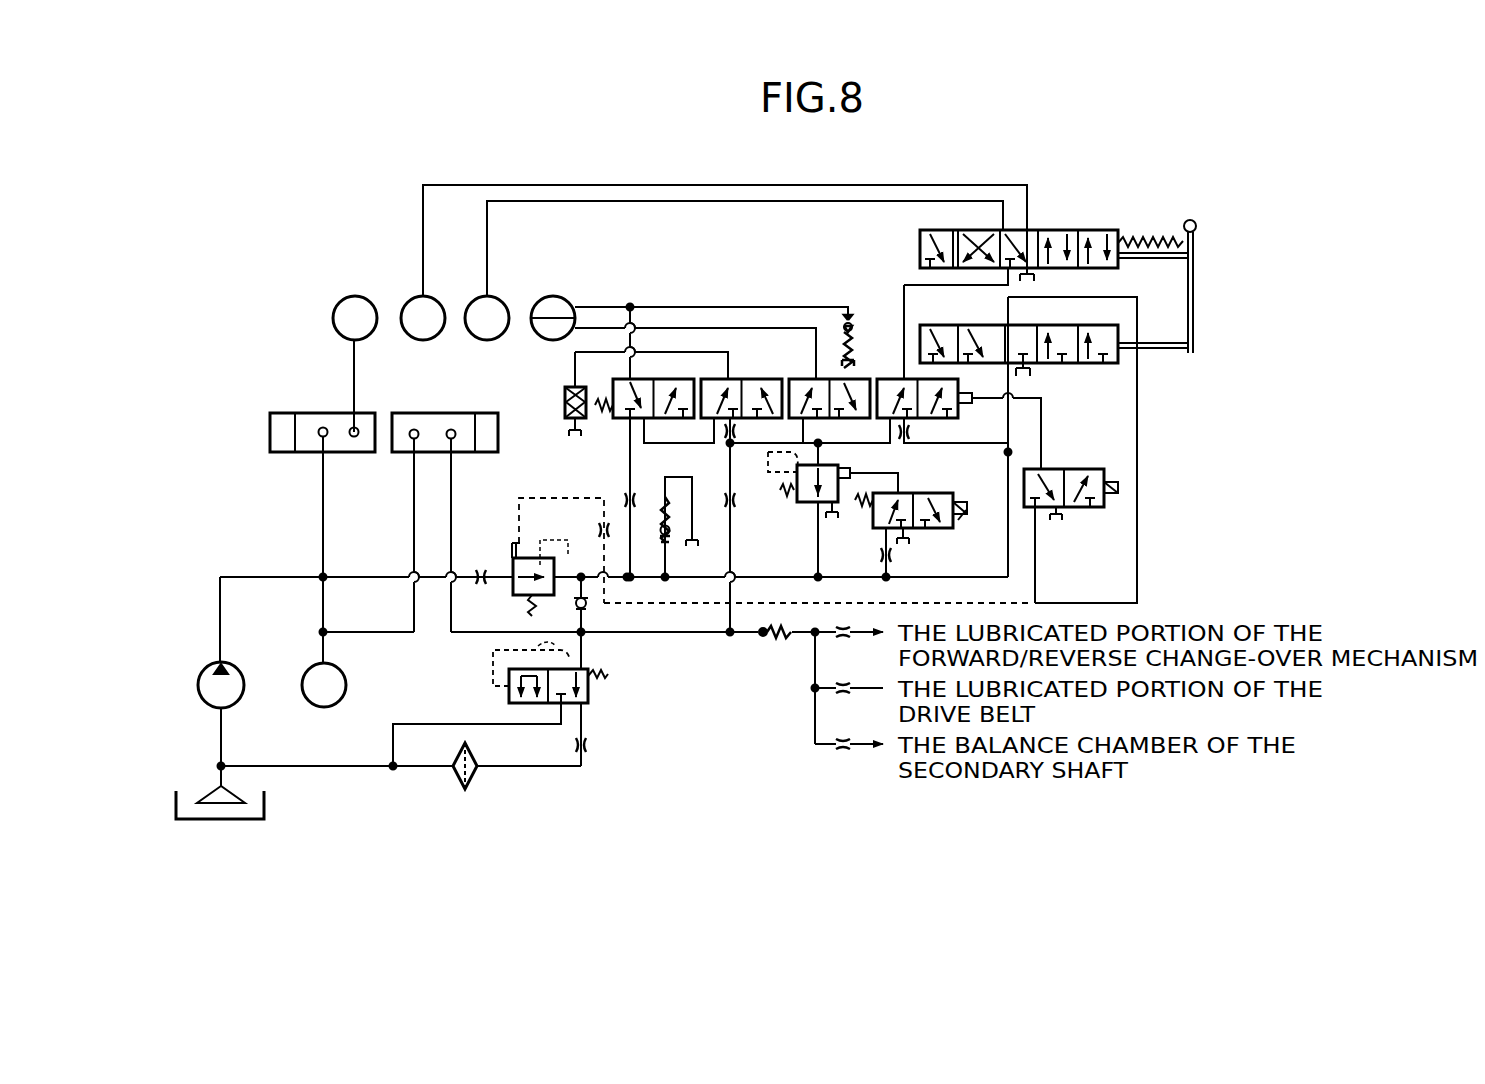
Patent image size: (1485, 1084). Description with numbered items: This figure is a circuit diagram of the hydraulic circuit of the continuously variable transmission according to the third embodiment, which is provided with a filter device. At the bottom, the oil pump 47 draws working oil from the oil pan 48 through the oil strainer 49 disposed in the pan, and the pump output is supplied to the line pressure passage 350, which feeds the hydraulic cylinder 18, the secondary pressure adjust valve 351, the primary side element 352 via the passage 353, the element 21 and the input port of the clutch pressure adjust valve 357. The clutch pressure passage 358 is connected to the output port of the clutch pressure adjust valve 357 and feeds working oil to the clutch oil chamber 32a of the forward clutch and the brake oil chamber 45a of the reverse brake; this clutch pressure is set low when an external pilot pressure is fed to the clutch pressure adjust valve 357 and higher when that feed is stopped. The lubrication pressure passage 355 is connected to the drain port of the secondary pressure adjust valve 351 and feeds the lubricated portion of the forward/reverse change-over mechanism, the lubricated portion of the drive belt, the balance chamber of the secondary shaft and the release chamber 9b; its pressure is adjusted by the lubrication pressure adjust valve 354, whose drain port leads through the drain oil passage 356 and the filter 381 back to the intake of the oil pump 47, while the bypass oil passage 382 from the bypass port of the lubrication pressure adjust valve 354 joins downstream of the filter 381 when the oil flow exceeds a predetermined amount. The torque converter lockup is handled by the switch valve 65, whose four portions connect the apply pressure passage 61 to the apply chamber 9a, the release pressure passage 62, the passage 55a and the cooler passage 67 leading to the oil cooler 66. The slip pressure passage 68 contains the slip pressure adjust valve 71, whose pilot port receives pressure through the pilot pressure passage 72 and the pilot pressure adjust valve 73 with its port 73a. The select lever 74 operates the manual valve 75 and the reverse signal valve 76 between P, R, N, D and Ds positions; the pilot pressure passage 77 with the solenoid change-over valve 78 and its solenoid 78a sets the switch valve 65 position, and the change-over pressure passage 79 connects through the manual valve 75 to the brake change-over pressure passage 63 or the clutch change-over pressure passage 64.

The primary pulley hydraulic cylinder 18 is at (355, 318).
The brake oil chamber 45a is at (714, 262).
The clutch oil chamber 32a is at (734, 270).
The apply chamber 9a is at (570, 300).
The release chamber 9b is at (540, 337).
The apply pressure passage 61 is at (604, 306).
The release pressure passage 62 is at (692, 326).
The brake change-over pressure passage 63 is at (745, 186).
The clutch change-over pressure passage 64 is at (806, 202).
The switch valve 65 is at (756, 371).
The oil cooler 66 is at (562, 406).
The cooler passage 67 is at (706, 348).
The slip pressure passage 68 is at (840, 454).
The slip pressure adjust valve 71 is at (804, 510).
The pilot pressure passage 72 is at (902, 486).
The pilot pressure adjust valve 73 is at (917, 533).
The pilot port 73a is at (965, 523).
The select lever 74 is at (1188, 278).
The manual valve 75 is at (919, 256).
The reverse signal valve 76 is at (919, 347).
The pilot pressure passage 77 is at (1136, 400).
The solenoid change-over valve 78 is at (1022, 492).
The solenoid 78a is at (1110, 482).
The change-over pressure passage 79 is at (904, 296).
The oil passage 55a is at (723, 444).
The line pressure passage 350 is at (263, 577).
The secondary pressure adjust valve 351 is at (461, 413).
The primary pulley hydraulic cylinder 352 is at (365, 413).
The oil passage 353 is at (353, 369).
The lubrication pressure adjust valve 354 is at (600, 690).
The lubrication pressure passage 355 is at (697, 644).
The drain oil passage 356 is at (588, 720).
The clutch pressure adjust valve 357 is at (510, 570).
The clutch pressure passage 358 is at (750, 577).
The filter 381 is at (476, 752).
The bypass oil passage 382 is at (404, 724).
The oil pump 47 is at (240, 668).
The oil pan 48 is at (270, 805).
The oil strainer 49 is at (212, 791).
The torque converter / lock-up clutch 21 is at (324, 685).